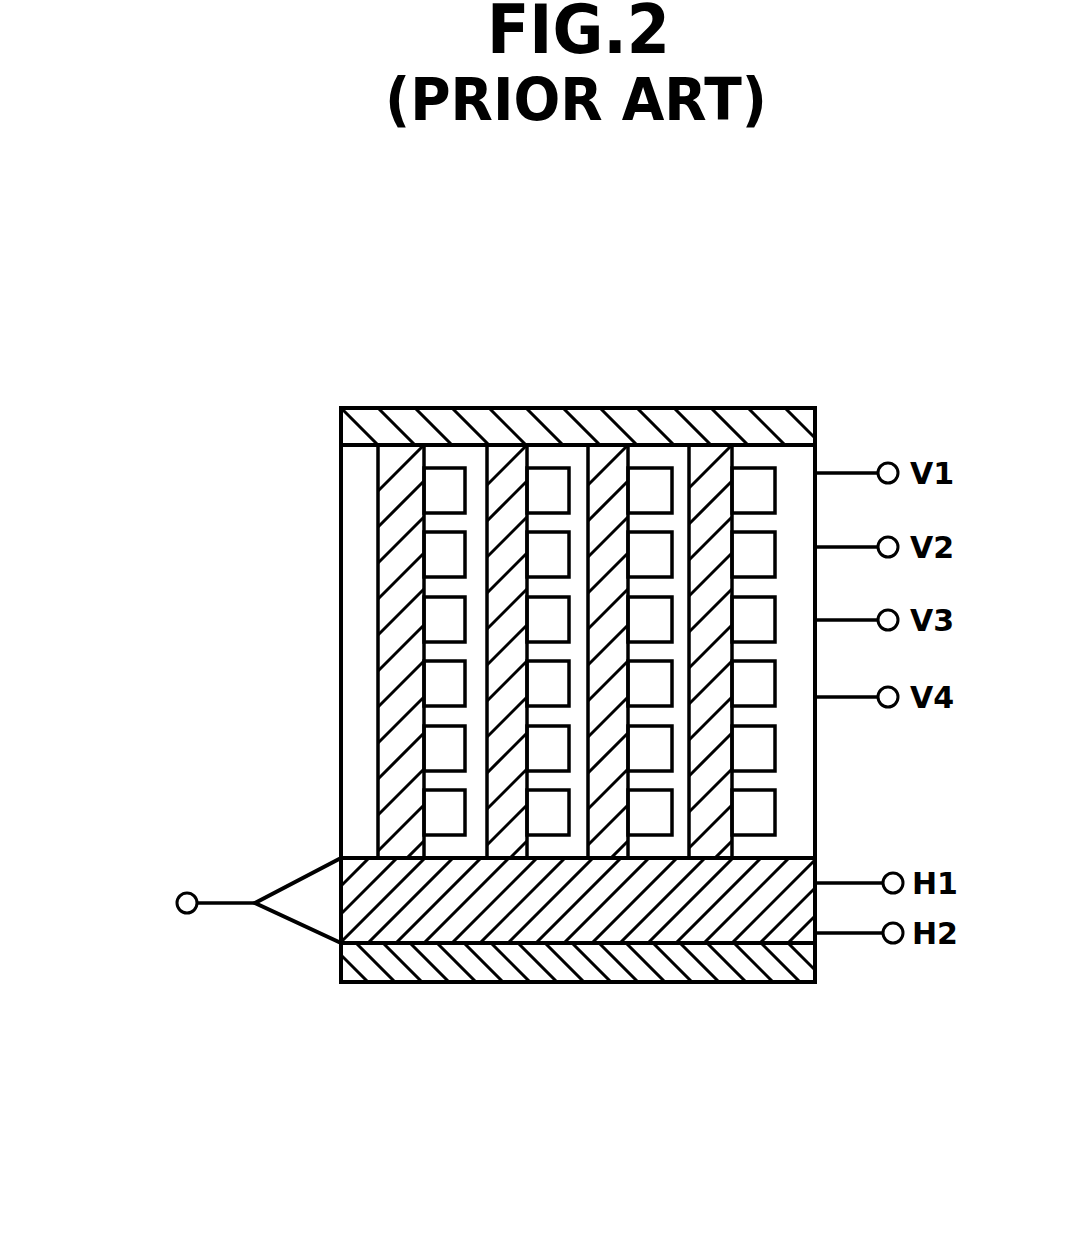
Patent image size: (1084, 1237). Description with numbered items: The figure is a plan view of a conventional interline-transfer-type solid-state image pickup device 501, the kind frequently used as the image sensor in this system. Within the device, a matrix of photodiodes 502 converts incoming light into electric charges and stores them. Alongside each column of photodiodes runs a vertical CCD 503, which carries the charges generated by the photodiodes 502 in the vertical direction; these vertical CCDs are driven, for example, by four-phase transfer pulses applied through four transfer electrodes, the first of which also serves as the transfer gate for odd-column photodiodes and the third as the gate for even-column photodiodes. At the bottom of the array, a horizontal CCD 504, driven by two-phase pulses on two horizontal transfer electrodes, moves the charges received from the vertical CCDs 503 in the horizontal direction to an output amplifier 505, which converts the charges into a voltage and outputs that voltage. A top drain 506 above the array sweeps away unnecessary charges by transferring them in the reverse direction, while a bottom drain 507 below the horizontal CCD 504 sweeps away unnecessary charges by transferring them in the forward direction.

The interline-transfer-type solid-state image pickup device 501 is at (341, 615).
The photodiode 502 is at (437, 492).
The vertical CCD 503 is at (721, 455).
The horizontal CCD 504 is at (815, 871).
The output amplifier 505 is at (292, 882).
The top drain 506 is at (510, 412).
The bottom drain 507 is at (443, 972).